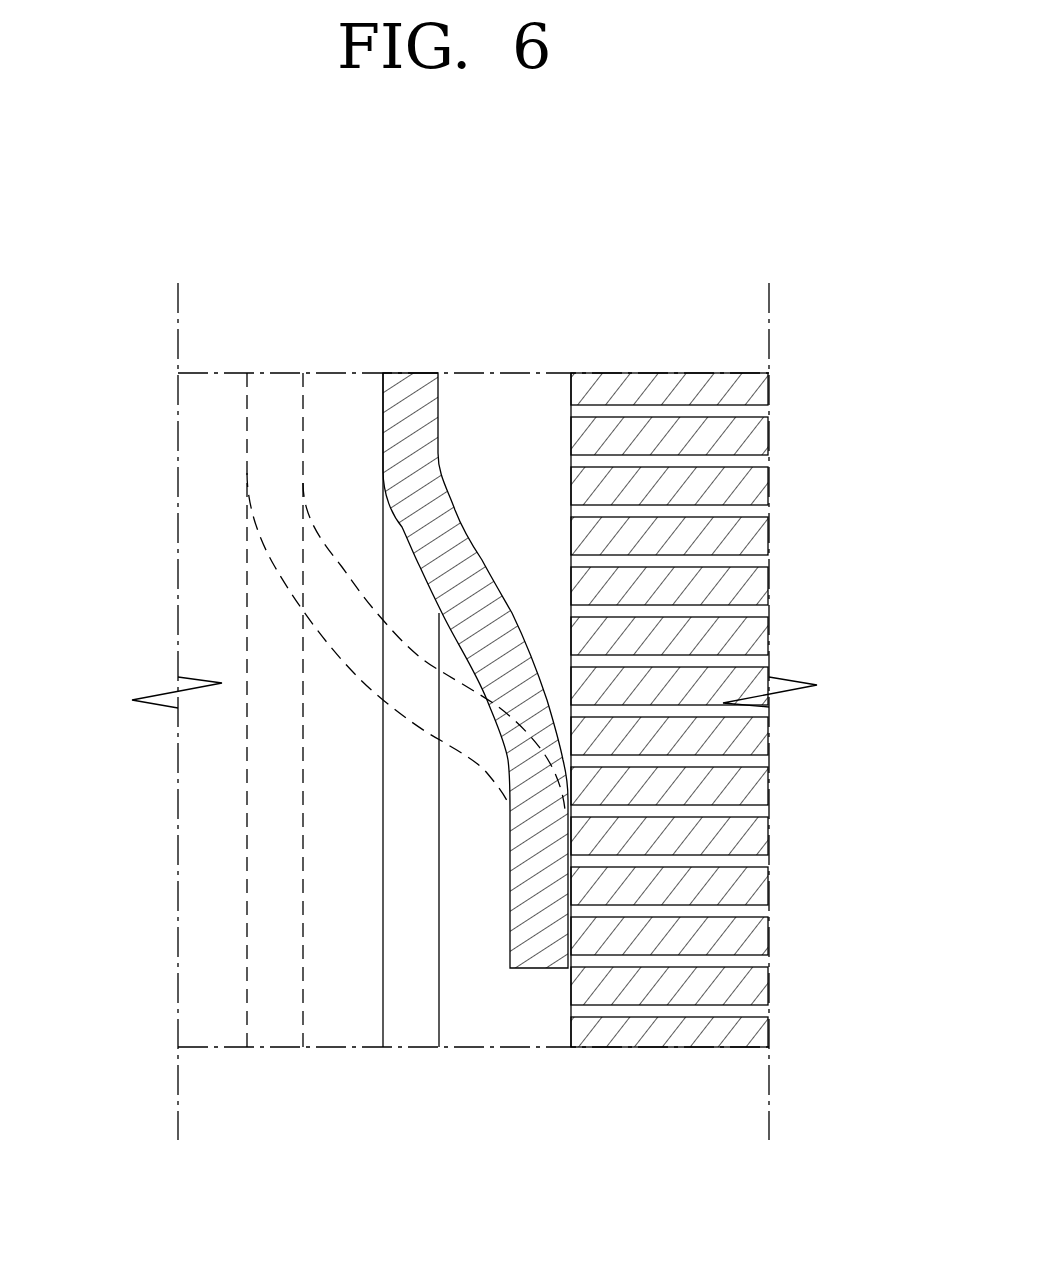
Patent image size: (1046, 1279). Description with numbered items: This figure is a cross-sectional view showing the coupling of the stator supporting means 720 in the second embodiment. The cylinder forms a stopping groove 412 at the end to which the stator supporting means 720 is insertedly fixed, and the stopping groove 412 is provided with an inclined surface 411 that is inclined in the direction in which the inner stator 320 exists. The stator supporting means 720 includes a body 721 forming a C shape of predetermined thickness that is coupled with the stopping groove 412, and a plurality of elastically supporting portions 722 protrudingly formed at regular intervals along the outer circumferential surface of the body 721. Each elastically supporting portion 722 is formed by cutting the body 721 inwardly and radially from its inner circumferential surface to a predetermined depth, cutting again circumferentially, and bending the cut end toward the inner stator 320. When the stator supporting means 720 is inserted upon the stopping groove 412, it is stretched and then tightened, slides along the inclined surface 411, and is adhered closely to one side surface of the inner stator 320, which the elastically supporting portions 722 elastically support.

The inner stator 320 is at (740, 582).
The inclined surface 411 is at (337, 813).
The stopping groove 412 is at (490, 1008).
The stator supporting means 720 is at (673, 710).
The body 721 is at (547, 830).
The elastically supporting portion 722 is at (413, 918).